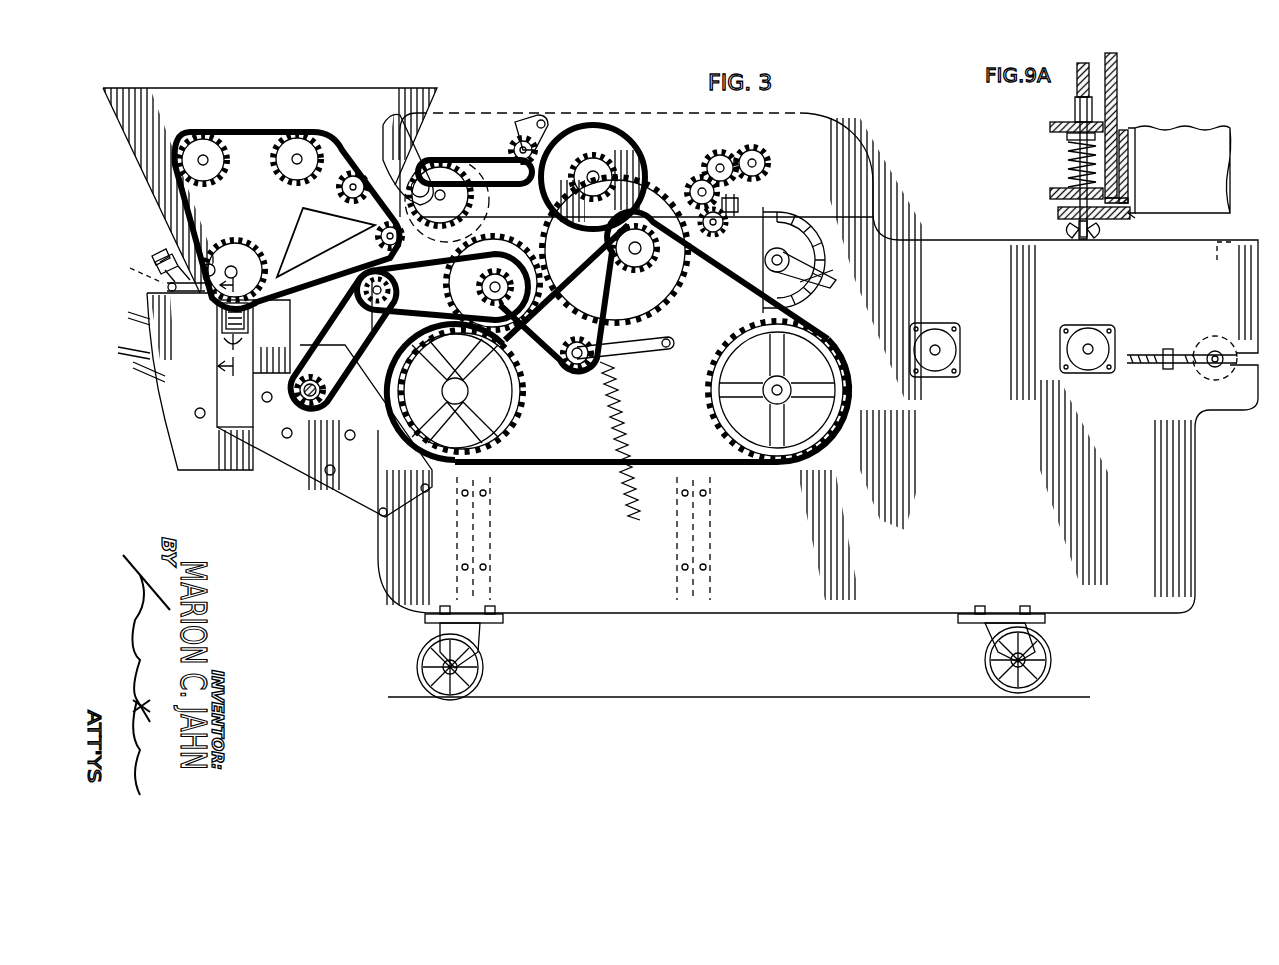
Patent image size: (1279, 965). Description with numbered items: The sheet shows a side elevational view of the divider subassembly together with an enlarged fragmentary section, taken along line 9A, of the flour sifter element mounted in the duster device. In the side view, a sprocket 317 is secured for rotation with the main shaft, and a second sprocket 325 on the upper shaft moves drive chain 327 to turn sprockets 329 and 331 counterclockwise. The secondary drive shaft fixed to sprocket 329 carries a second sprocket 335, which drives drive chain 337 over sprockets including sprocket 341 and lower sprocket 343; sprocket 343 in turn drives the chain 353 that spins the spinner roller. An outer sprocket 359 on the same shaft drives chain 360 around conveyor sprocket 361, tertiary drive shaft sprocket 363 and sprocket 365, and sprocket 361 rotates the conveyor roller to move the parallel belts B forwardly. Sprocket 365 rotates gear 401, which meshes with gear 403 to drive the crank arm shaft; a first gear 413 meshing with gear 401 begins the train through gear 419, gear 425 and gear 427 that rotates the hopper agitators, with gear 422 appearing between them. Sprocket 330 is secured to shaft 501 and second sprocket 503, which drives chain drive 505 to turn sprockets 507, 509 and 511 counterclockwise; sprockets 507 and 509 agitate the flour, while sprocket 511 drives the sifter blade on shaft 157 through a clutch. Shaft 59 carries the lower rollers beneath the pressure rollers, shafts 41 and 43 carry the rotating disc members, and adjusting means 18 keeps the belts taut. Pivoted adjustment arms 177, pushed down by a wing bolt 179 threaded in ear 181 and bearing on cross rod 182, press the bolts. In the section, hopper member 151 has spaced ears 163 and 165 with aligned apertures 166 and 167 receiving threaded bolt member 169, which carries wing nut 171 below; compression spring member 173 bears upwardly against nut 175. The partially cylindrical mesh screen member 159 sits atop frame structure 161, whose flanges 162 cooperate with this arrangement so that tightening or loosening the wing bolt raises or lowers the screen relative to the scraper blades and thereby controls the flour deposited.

In FIG. 3, the chain drive 505 is at (253, 130).
In FIG. 3, the sprocket 509 is at (200, 142).
In FIG. 3, the sprocket 507 is at (300, 140).
In FIG. 3, the sprocket 511 is at (225, 245).
In FIG. 3, the shaft 157 is at (245, 260).
In FIG. 3, the shaft 501 is at (375, 236).
In FIG. 3, the second sprocket 503 is at (303, 208).
In FIG. 3, the second sprocket 325 is at (405, 150).
In FIG. 3, the drive chain 327 is at (485, 158).
In FIG. 3, the sprocket 329 is at (482, 237).
In FIG. 3, the second sprocket 335 is at (510, 245).
In FIG. 3, the outer sprocket 359 is at (510, 265).
In FIG. 3, the sprocket 331 is at (595, 130).
In FIG. 3, the gear 403 is at (622, 160).
In FIG. 3, the gear 401 is at (675, 297).
In FIG. 3, the sprocket 365 is at (652, 258).
In FIG. 3, the chain 353 is at (515, 358).
In FIG. 3, the sprocket 330 is at (354, 306).
In FIG. 3, the drive chain 337 is at (505, 420).
In FIG. 3, the conveyor sprocket 361 is at (527, 415).
In FIG. 3, the lower sprocket 343 is at (438, 480).
In FIG. 3, the chain 360 is at (737, 470).
In FIG. 3, the tertiary drive shaft sprocket 363 is at (845, 400).
In FIG. 3, the shaft 59 is at (784, 380).
In FIG. 3, the first gear 413 is at (722, 225).
In FIG. 3, the gear 419 is at (740, 200).
In FIG. 3, the gear 422 is at (698, 176).
In FIG. 3, the gear 425 is at (727, 152).
In FIG. 3, the gear 427 is at (770, 155).
In FIG. 3, the shaft 43 is at (940, 348).
In FIG. 3, the shaft 41 is at (1094, 347).
In FIG. 3, the adjusting means 18 is at (1162, 366).
In FIG. 3, the adjustment arm 177 is at (188, 295).
In FIG. 9A, the adjustment arm 177 is at (1087, 62).
In FIG. 3, the wing bolt 179 is at (160, 255).
In FIG. 3, the ear 181 is at (155, 268).
In FIG. 3, the cross rod 182 is at (135, 268).
In FIG. 3, the sprocket 317 is at (313, 400).
In FIG. 3, the sprocket 341 is at (400, 445).
In FIG. 3, the section line 9A is at (200, 365).
In FIG. 3, the conveyor belt B is at (122, 350).
In FIG. 9A, the hopper member 151 is at (1117, 62).
In FIG. 9A, the ear 163 is at (1050, 125).
In FIG. 9A, the ear 165 is at (1050, 192).
In FIG. 9A, the aperture 166 is at (1076, 118).
In FIG. 9A, the nut 175 is at (1066, 137).
In FIG. 9A, the aperture 167 is at (1068, 165).
In FIG. 9A, the compression spring member 173 is at (1128, 160).
In FIG. 9A, the frame structure 161 is at (1135, 188).
In FIG. 9A, the flange 162 is at (1058, 210).
In FIG. 9A, the threaded bolt member 169 is at (1100, 218).
In FIG. 9A, the wing nut 171 is at (1068, 230).
In FIG. 9A, the mesh screen member 159 is at (1185, 128).